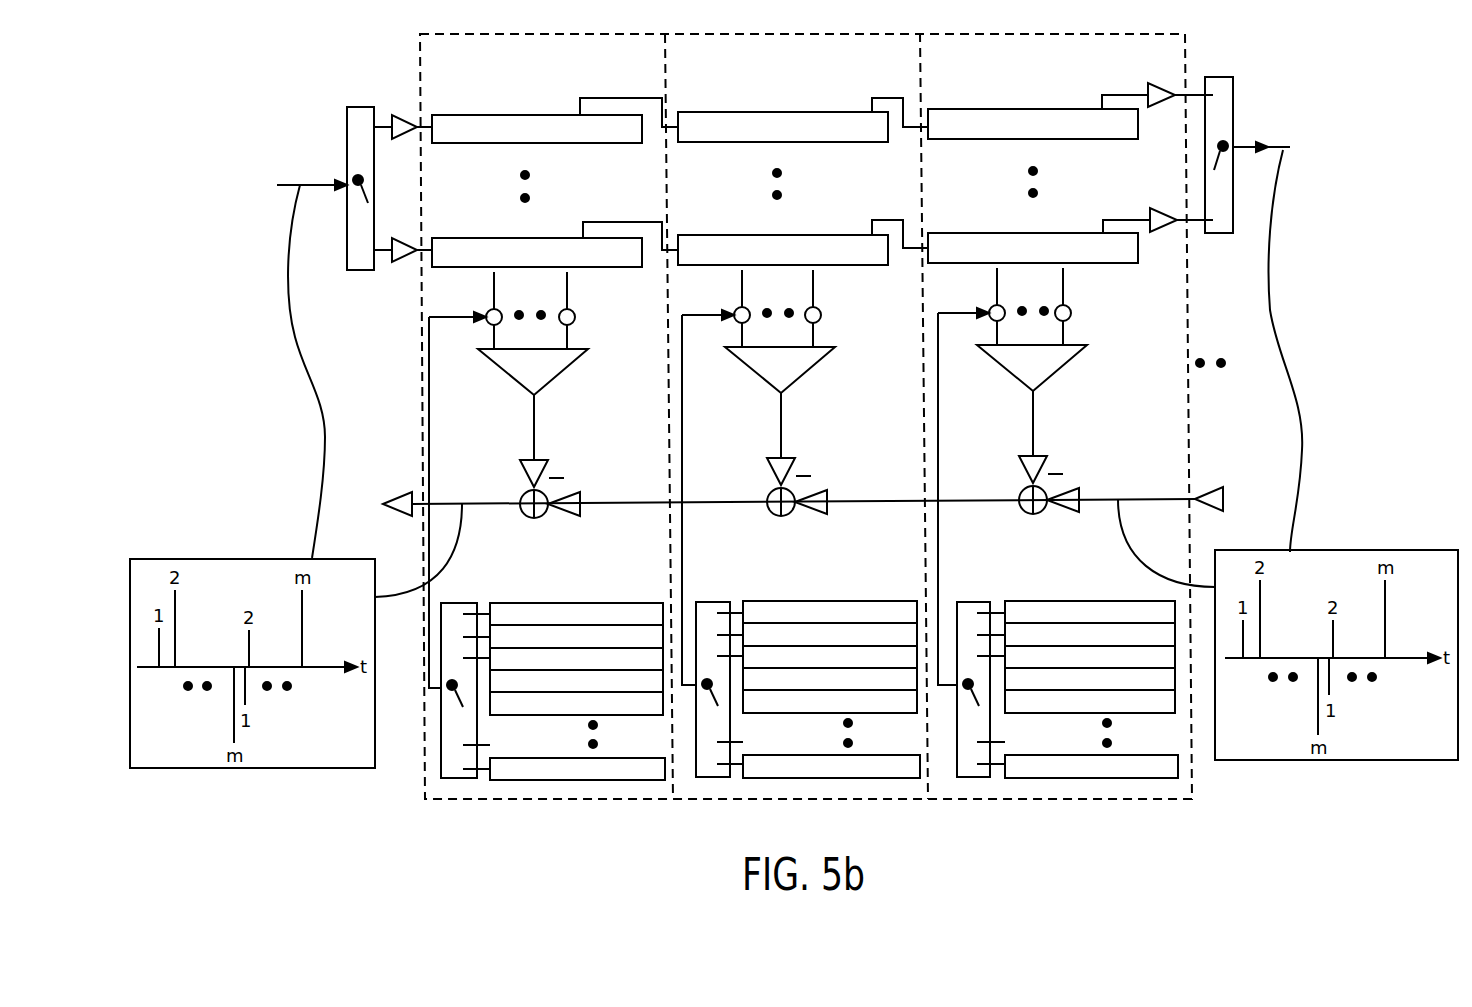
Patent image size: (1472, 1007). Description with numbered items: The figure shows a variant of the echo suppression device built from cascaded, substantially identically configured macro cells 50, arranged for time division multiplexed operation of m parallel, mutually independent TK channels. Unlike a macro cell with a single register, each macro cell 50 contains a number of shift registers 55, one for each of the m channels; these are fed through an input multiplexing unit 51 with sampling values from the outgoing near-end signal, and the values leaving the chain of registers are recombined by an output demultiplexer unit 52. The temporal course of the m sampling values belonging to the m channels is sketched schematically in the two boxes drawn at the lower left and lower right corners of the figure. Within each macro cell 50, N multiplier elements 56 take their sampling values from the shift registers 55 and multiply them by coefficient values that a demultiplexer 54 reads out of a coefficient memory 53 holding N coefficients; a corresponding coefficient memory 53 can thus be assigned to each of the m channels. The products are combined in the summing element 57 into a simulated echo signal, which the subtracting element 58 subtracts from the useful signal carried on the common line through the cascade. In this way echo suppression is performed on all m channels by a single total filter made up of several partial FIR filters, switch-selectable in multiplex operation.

The macro cell 50 is at (485, 45).
The input multiplexing unit 51 is at (363, 107).
The output demultiplexer unit 52 is at (1218, 77).
The coefficient memory 53 is at (546, 745).
The demultiplexer 54 is at (452, 775).
The shift register 55 is at (1043, 233).
The multiplier element 56 is at (486, 322).
The summing element 57 is at (505, 378).
The subtracting element 58 is at (520, 507).